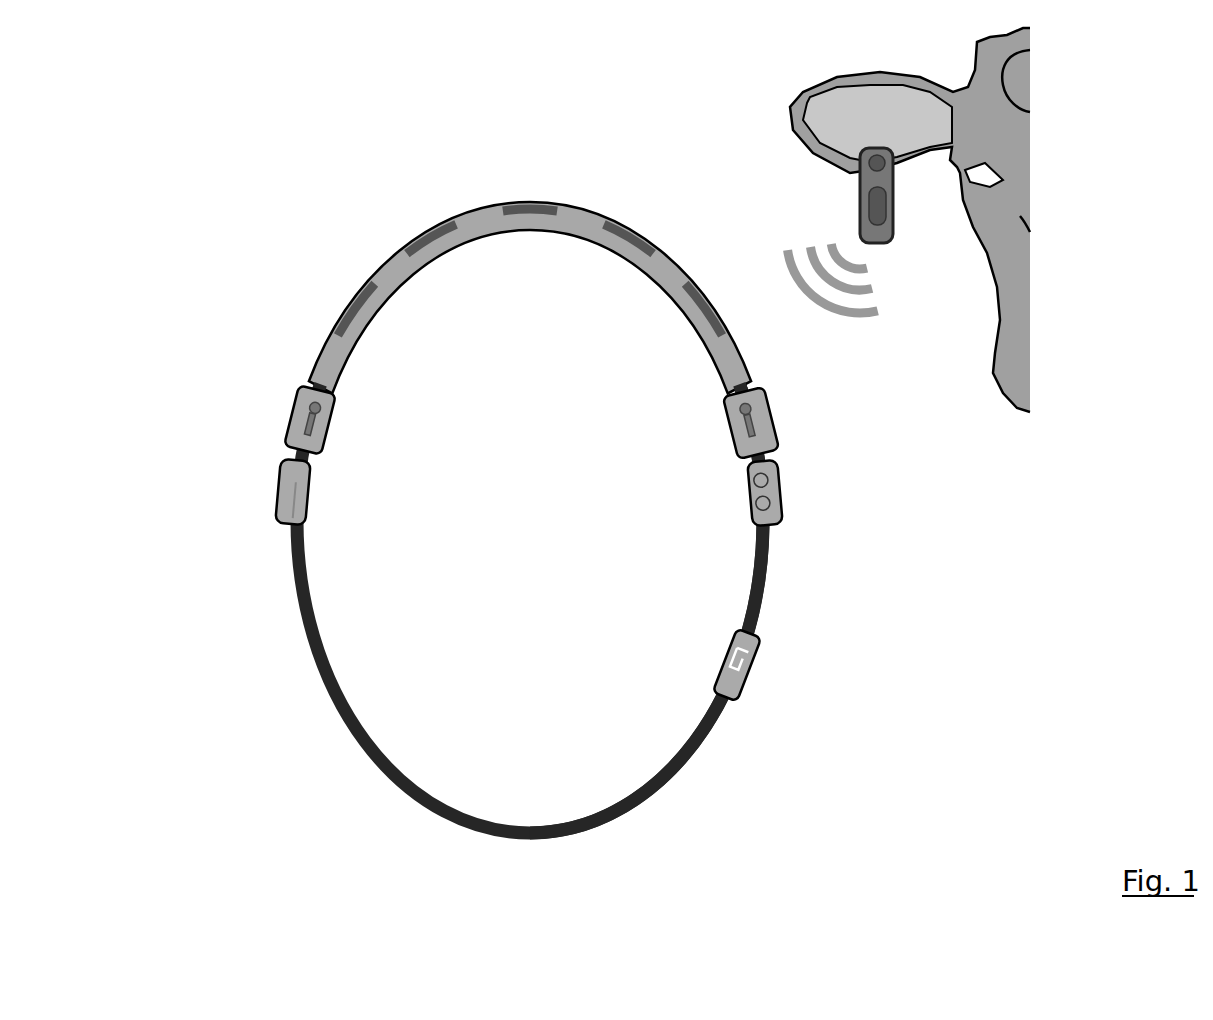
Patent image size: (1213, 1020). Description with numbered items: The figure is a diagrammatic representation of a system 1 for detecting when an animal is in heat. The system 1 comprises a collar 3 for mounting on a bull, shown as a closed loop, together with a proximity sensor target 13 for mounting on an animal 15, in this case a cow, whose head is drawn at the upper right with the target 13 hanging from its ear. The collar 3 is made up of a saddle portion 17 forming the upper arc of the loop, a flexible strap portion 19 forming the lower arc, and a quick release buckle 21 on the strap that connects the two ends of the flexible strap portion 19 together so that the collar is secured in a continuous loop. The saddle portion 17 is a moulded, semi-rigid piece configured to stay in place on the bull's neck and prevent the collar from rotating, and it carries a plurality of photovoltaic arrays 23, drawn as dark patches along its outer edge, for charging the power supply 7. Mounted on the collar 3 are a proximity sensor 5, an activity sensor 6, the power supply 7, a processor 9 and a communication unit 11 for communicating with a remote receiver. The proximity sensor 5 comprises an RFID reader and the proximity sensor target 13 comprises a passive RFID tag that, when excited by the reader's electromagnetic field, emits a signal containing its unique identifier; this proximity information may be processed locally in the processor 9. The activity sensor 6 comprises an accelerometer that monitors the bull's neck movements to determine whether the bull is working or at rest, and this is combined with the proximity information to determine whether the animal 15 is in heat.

The system for detecting when an animal is in heat 1 is at (264, 199).
The collar 3 is at (352, 725).
The proximity sensor 5 is at (282, 492).
The activity sensor 6 is at (283, 520).
The power supply 7 is at (750, 376).
The processor 9 is at (332, 356).
The communication unit 11 is at (293, 415).
The proximity sensor target 13 is at (893, 223).
The animal 15 is at (1020, 216).
The saddle portion 17 is at (608, 272).
The flexible strap portion 19 is at (667, 775).
The quick release buckle 21 is at (748, 668).
The photovoltaic arrays 23 is at (352, 297).